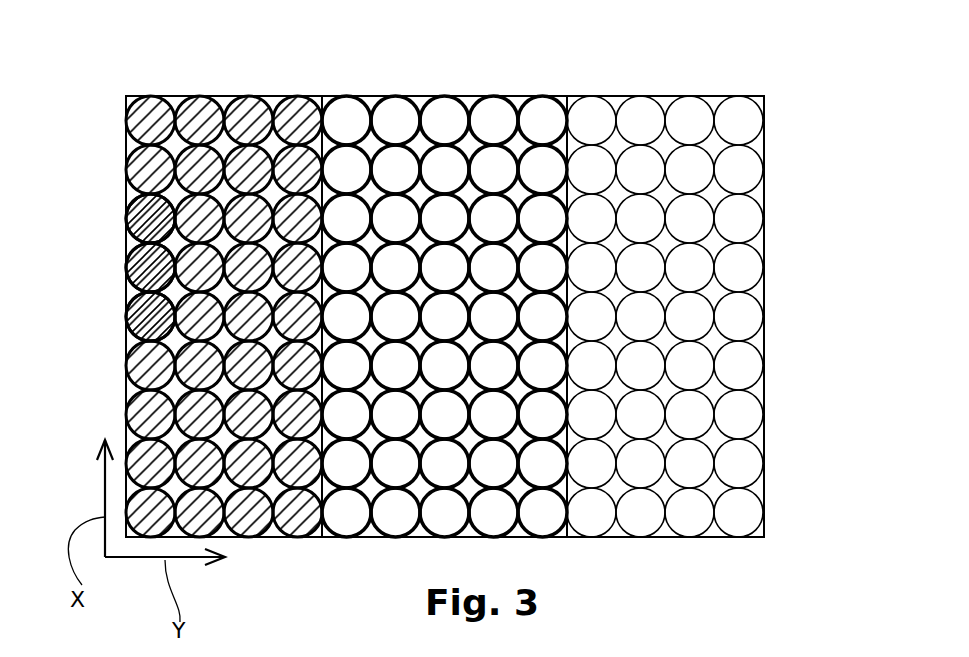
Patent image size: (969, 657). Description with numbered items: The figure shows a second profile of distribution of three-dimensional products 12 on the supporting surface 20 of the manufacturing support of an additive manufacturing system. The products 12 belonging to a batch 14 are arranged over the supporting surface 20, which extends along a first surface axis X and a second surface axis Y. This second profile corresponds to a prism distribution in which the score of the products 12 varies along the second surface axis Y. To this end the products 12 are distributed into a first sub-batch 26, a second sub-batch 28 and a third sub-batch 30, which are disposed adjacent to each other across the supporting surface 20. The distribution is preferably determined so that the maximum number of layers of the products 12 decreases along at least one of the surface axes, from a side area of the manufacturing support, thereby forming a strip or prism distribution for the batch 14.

The batch 14 is at (757, 88).
The product 12 is at (135, 212).
The first sub-batch 26 is at (184, 274).
The second sub-batch 28 is at (422, 95).
The third sub-batch 30 is at (663, 95).
The supporting surface 20 is at (765, 241).